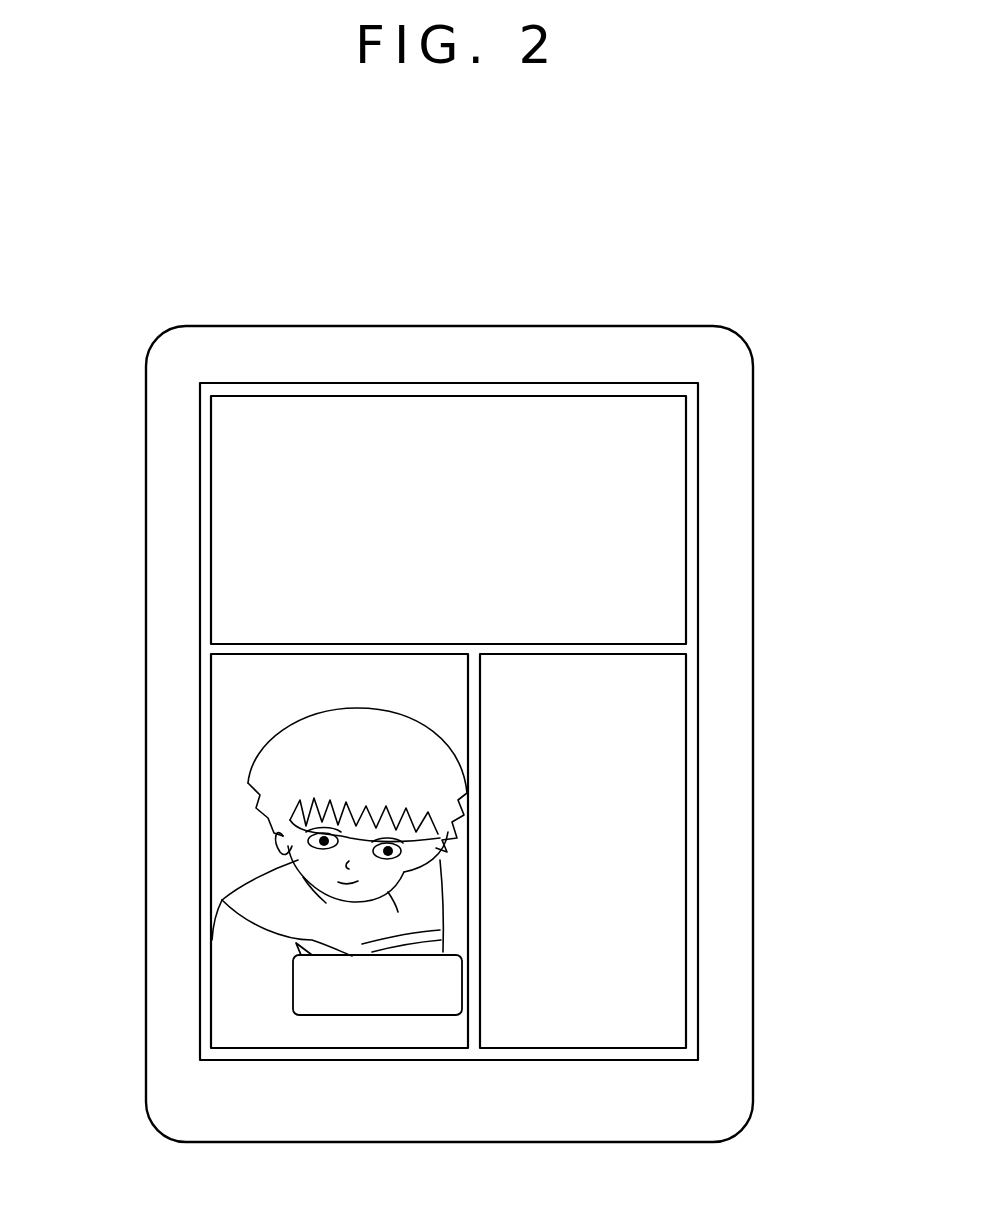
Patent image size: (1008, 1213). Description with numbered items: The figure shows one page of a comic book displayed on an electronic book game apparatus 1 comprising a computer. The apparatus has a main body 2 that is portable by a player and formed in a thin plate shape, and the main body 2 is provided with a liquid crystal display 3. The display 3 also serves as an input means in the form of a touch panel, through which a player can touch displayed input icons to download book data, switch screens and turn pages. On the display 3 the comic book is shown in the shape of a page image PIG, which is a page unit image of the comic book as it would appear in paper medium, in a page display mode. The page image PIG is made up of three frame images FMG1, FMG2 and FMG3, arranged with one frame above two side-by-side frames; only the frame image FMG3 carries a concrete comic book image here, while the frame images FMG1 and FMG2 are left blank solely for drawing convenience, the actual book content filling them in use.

The electronic book game apparatus 1 is at (657, 172).
The main body 2 is at (753, 400).
The liquid crystal display 3 is at (574, 391).
The page image PIG is at (449, 722).
The frame image FMG1 is at (667, 521).
The frame image FMG2 is at (667, 800).
The frame image FMG3 is at (242, 1010).